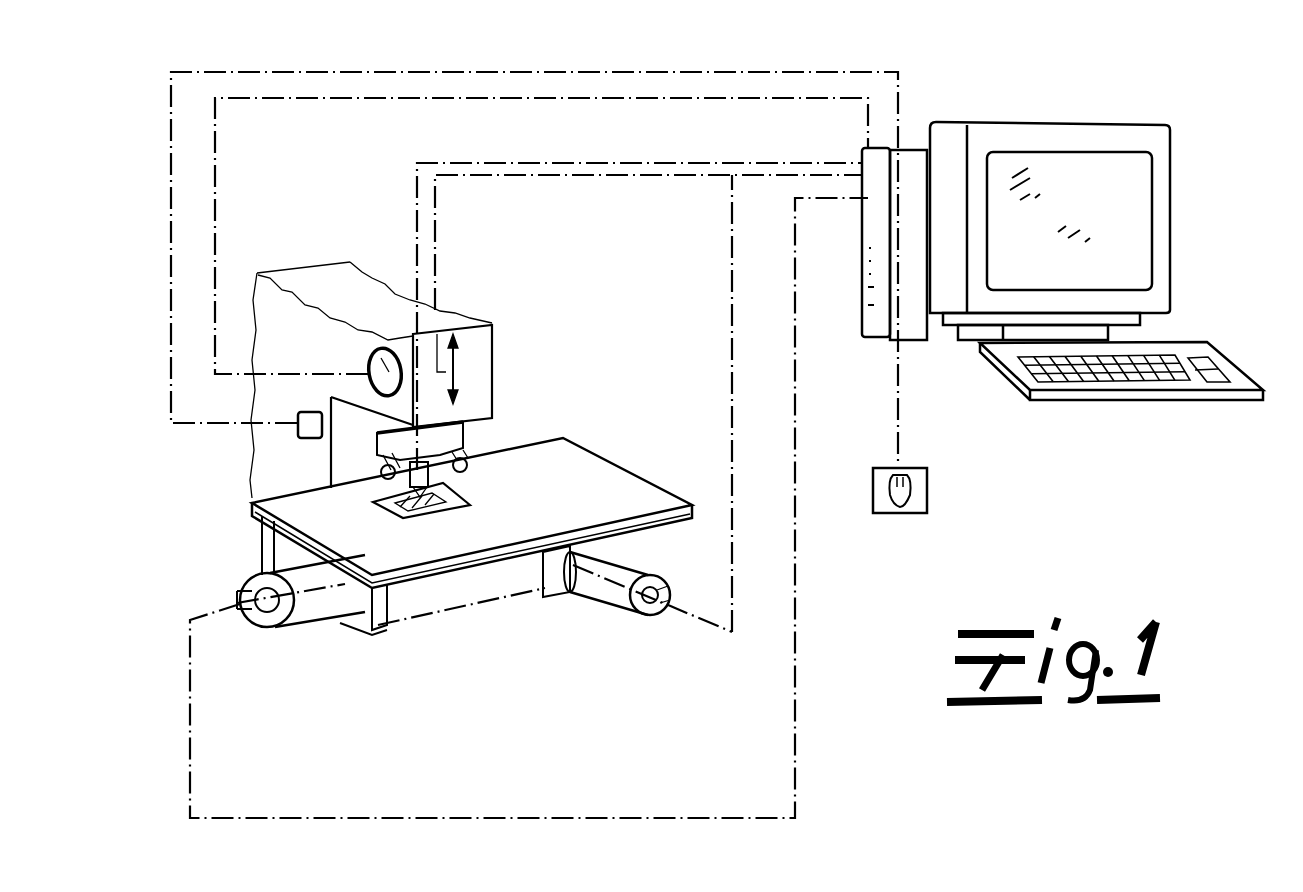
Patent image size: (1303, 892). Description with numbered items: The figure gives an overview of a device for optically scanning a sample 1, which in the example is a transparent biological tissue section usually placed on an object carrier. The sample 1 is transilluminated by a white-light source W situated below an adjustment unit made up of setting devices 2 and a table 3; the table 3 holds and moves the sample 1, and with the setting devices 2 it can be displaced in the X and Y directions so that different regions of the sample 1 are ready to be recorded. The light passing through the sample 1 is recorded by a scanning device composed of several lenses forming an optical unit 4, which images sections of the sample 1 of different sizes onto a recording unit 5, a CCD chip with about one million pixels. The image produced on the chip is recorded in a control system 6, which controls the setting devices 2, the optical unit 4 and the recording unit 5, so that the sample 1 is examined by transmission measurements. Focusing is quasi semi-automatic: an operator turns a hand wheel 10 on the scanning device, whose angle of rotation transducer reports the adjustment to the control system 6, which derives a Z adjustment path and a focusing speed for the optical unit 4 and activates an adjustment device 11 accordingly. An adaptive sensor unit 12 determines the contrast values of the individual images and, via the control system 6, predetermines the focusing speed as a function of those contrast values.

The sample 1 is at (421, 617).
The setting devices 2 is at (297, 618).
The table 3 is at (592, 465).
The optical unit 4 is at (458, 438).
The recording unit 5 is at (396, 322).
The control system 6 is at (1193, 142).
The hand wheel 10 is at (380, 350).
The adjustment device 11 is at (464, 365).
The adaptive sensor unit 12 is at (297, 436).
The white-light source W is at (498, 577).